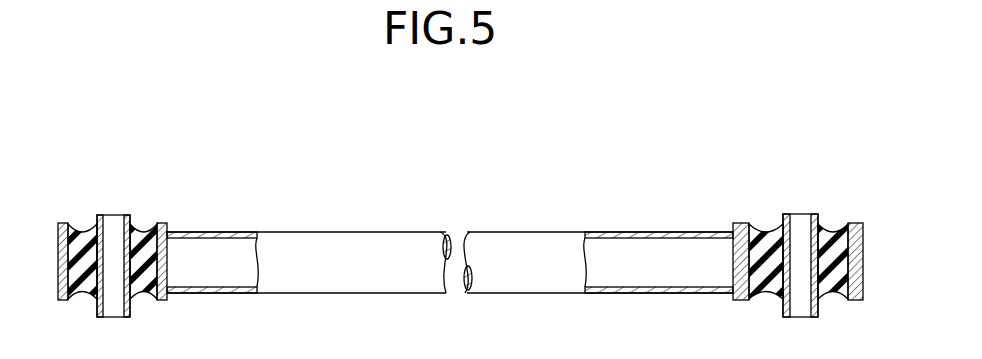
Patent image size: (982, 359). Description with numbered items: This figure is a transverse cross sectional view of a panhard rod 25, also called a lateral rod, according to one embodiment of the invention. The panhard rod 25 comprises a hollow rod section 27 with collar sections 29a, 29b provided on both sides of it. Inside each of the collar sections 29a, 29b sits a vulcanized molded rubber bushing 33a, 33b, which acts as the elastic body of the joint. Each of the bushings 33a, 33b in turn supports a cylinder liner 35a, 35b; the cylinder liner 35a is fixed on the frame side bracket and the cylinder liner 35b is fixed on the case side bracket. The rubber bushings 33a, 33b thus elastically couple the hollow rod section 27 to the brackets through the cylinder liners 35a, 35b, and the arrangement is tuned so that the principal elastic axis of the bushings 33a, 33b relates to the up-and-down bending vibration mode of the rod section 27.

The panhard rod 25 is at (455, 173).
The hollow rod section 27 is at (372, 240).
The collar section 29a is at (131, 222).
The collar section 29b is at (794, 227).
The bushing 33a is at (85, 240).
The bushing 33b is at (768, 232).
The cylinder liner 35a is at (118, 214).
The cylinder liner 35b is at (803, 224).